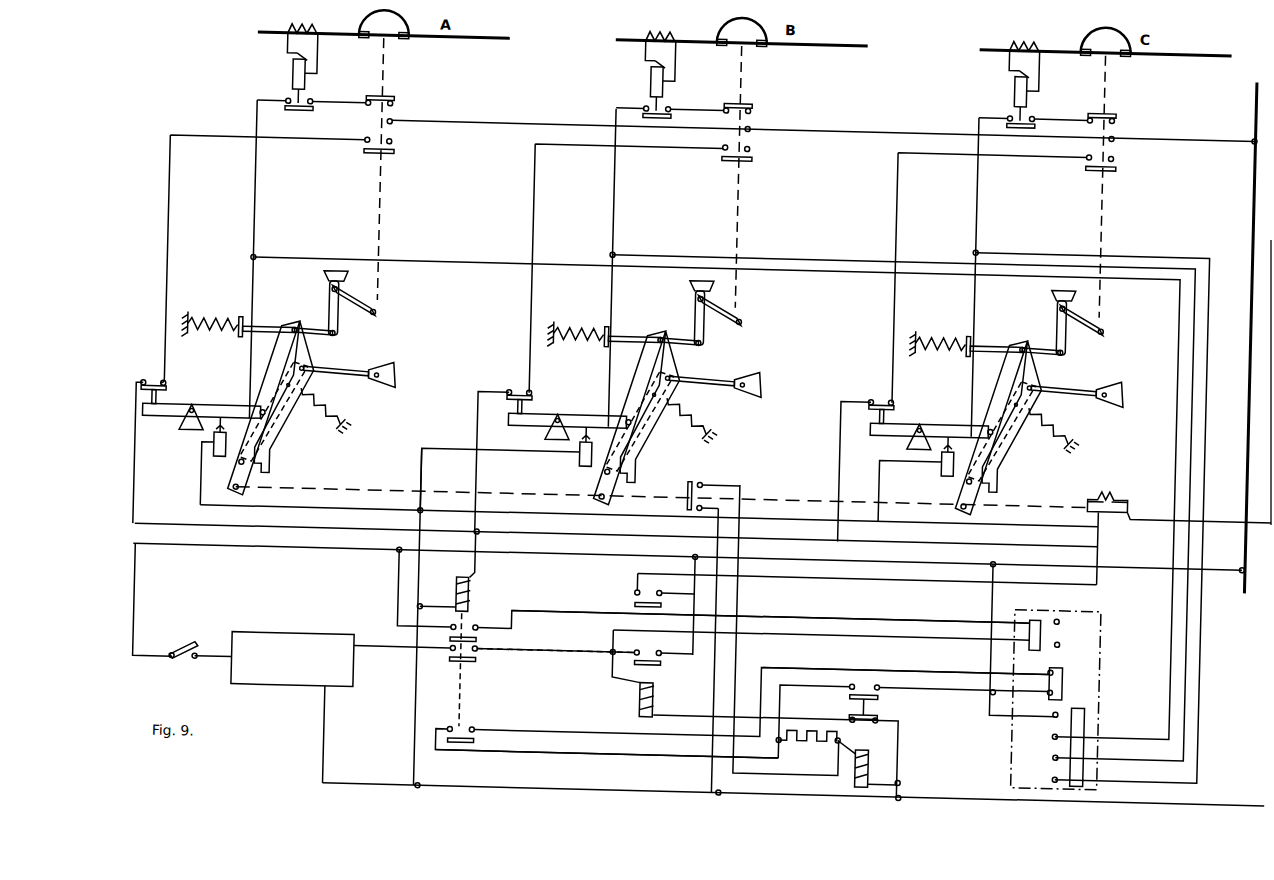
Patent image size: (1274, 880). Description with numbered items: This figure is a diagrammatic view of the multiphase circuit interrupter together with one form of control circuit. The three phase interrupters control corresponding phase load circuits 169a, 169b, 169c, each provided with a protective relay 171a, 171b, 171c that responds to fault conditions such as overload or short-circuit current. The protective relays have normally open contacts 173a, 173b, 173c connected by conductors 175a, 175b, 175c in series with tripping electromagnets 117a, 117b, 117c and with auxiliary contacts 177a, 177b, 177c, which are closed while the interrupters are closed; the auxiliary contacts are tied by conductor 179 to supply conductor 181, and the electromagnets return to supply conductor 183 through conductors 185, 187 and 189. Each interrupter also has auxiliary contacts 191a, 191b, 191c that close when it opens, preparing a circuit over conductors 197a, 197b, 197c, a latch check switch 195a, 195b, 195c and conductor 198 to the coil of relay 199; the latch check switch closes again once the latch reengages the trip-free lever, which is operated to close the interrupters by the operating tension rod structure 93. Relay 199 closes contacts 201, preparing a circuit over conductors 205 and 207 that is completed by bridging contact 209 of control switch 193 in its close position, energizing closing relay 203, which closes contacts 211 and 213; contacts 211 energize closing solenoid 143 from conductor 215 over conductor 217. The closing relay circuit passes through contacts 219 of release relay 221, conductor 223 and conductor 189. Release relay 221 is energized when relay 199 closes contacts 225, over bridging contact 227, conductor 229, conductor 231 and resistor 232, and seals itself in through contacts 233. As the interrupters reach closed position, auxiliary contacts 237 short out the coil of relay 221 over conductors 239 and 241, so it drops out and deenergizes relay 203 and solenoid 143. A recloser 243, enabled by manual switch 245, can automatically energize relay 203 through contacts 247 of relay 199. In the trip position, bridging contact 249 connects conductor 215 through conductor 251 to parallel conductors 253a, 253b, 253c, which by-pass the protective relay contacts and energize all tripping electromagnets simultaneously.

The phase load circuit 169a is at (275, 55).
The phase load circuit 169b is at (625, 63).
The phase load circuit 169c is at (985, 74).
The protective relay 171a is at (366, 155).
The protective relay 171b is at (725, 163).
The protective relay 171c is at (1091, 173).
The normally open contacts 173a is at (306, 96).
The normally open contacts 173b is at (661, 103).
The normally open contacts 173c is at (1029, 113).
The auxiliary contacts 177a is at (404, 114).
The auxiliary contacts 177b is at (765, 121).
The auxiliary contacts 177c is at (1122, 129).
The auxiliary contacts 191a is at (363, 136).
The auxiliary contacts 191b is at (716, 143).
The auxiliary contacts 191c is at (1083, 154).
The conductor 197a is at (166, 180).
The conductor 197b is at (529, 179).
The conductor 197c is at (894, 180).
The conductor 175a is at (252, 178).
The conductor 175b is at (612, 177).
The conductor 175c is at (974, 178).
The conductor 179 is at (848, 130).
The supply conductor 181 is at (1248, 168).
The supply conductor 183 is at (1265, 351).
The latch check switch 195a is at (175, 381).
The latch check switch 195b is at (502, 389).
The latch check switch 195c is at (863, 400).
The tripping electromagnet 117a is at (191, 437).
The tripping electromagnet 117b is at (557, 447).
The tripping electromagnet 117c is at (919, 457).
The conductor 185 is at (328, 513).
The operating tension rod structure 93 is at (783, 489).
The conductor 198 is at (546, 534).
The closing solenoid 143 is at (1136, 479).
The auxiliary contacts 237 is at (708, 477).
The conductor 215 is at (1008, 553).
The conductor 217 is at (950, 573).
The conductor 241 is at (721, 586).
The conductor 239 is at (745, 600).
The conductor 187 is at (422, 692).
The conductor 189 is at (618, 781).
The manual switch 245 is at (214, 638).
The recloser 243 is at (308, 633).
The relay 199 is at (519, 588).
The contacts 201 is at (470, 629).
The contacts 247 is at (485, 660).
The contacts 225 is at (484, 735).
The conductor 205 is at (854, 609).
The conductor 207 is at (898, 632).
The contacts 211 is at (652, 581).
The contacts 213 is at (660, 642).
The closing relay 203 is at (623, 717).
The conductor 229 is at (846, 665).
The contacts 233 is at (874, 681).
The contacts 219 is at (868, 718).
The resistor 232 is at (820, 753).
The conductor 231 is at (662, 752).
The release relay 221 is at (937, 765).
The conductor 223 is at (904, 748).
The control switch 193 is at (1145, 631).
The bridging contact 209 is at (1048, 628).
The bridging contact 227 is at (1060, 658).
The conductor 251 is at (996, 709).
The bridging contact 249 is at (1084, 712).
The conductor 253a is at (1170, 602).
The conductor 253b is at (1202, 625).
The conductor 253c is at (1206, 658).